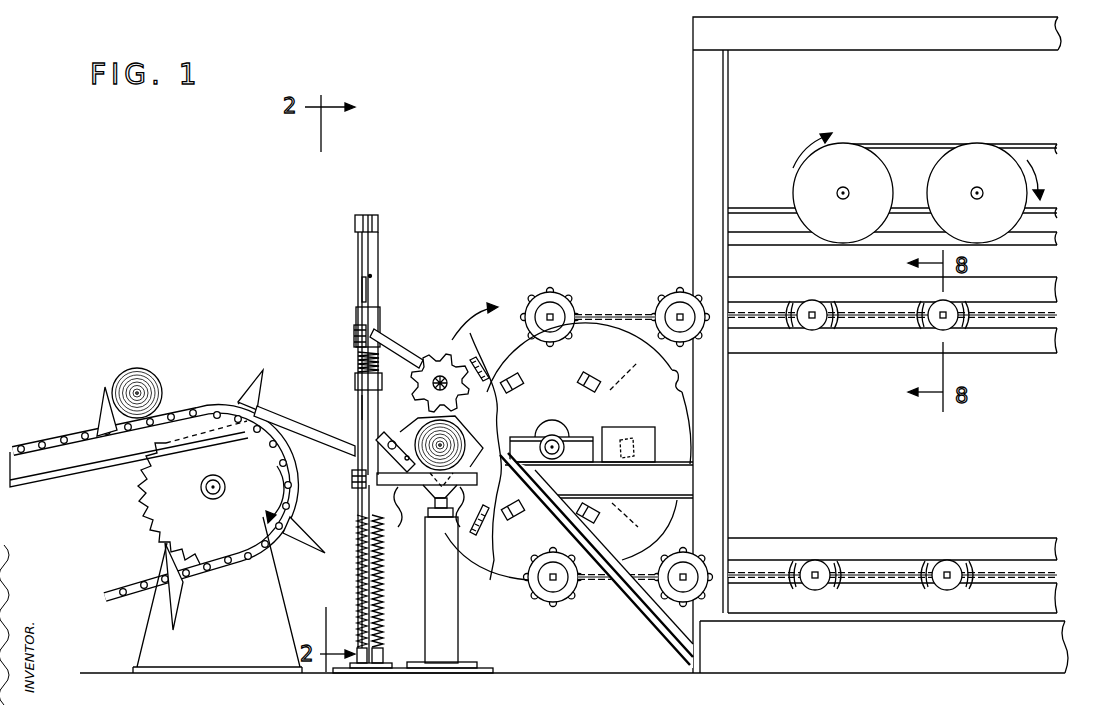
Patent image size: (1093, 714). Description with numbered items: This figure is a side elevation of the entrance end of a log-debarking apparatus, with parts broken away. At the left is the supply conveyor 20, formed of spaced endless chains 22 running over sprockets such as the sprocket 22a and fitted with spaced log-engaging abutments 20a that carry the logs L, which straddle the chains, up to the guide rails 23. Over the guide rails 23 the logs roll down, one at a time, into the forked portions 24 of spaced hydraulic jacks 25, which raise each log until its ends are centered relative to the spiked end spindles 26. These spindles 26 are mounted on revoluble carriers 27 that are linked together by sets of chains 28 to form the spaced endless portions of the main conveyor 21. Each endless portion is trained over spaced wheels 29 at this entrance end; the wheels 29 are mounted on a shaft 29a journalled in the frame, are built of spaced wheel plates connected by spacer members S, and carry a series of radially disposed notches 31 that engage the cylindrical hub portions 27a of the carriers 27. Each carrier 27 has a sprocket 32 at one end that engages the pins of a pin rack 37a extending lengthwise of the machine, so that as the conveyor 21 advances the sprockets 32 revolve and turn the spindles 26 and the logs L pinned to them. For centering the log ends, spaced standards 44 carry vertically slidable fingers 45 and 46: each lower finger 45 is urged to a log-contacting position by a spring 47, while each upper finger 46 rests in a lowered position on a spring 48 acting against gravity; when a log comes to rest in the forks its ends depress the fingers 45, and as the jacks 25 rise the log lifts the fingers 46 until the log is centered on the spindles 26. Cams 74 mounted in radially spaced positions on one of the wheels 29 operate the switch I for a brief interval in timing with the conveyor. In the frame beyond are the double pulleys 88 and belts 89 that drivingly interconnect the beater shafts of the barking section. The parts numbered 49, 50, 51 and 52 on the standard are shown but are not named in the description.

The supply conveyor 20 is at (25, 456).
The log-engaging abutments 20a is at (103, 403).
The main conveyor 21 is at (877, 328).
The endless chains 22 is at (87, 462).
The sprocket 22a is at (175, 522).
The guide rails 23 is at (304, 424).
The forked portions 24 is at (483, 450).
The hydraulic jacks 25 is at (447, 622).
The spiked end spindles 26 is at (440, 376).
The revoluble carriers 27 is at (667, 295).
The cylindrical hub portions 27a is at (432, 388).
The chains 28 is at (765, 320).
The wheels 29 is at (651, 413).
The shaft 29a is at (554, 440).
The radially disposed notches 31 is at (670, 390).
The gear or sprocket 32 is at (535, 292).
The pin rack 37a is at (907, 348).
The standards 44 is at (356, 243).
The finger 45 is at (400, 482).
The finger 46 is at (391, 345).
The spring 47 is at (383, 612).
The spring 48 is at (358, 364).
The link 49 is at (352, 472).
The rod 50 is at (362, 402).
The nut 51 is at (355, 330).
The slot 52 is at (361, 282).
The cams 74 is at (508, 376).
The double pulleys 88 is at (973, 167).
The belts 89 is at (1017, 145).
The logs L is at (137, 372).
The spacer members S is at (478, 360).
The switch I is at (615, 452).